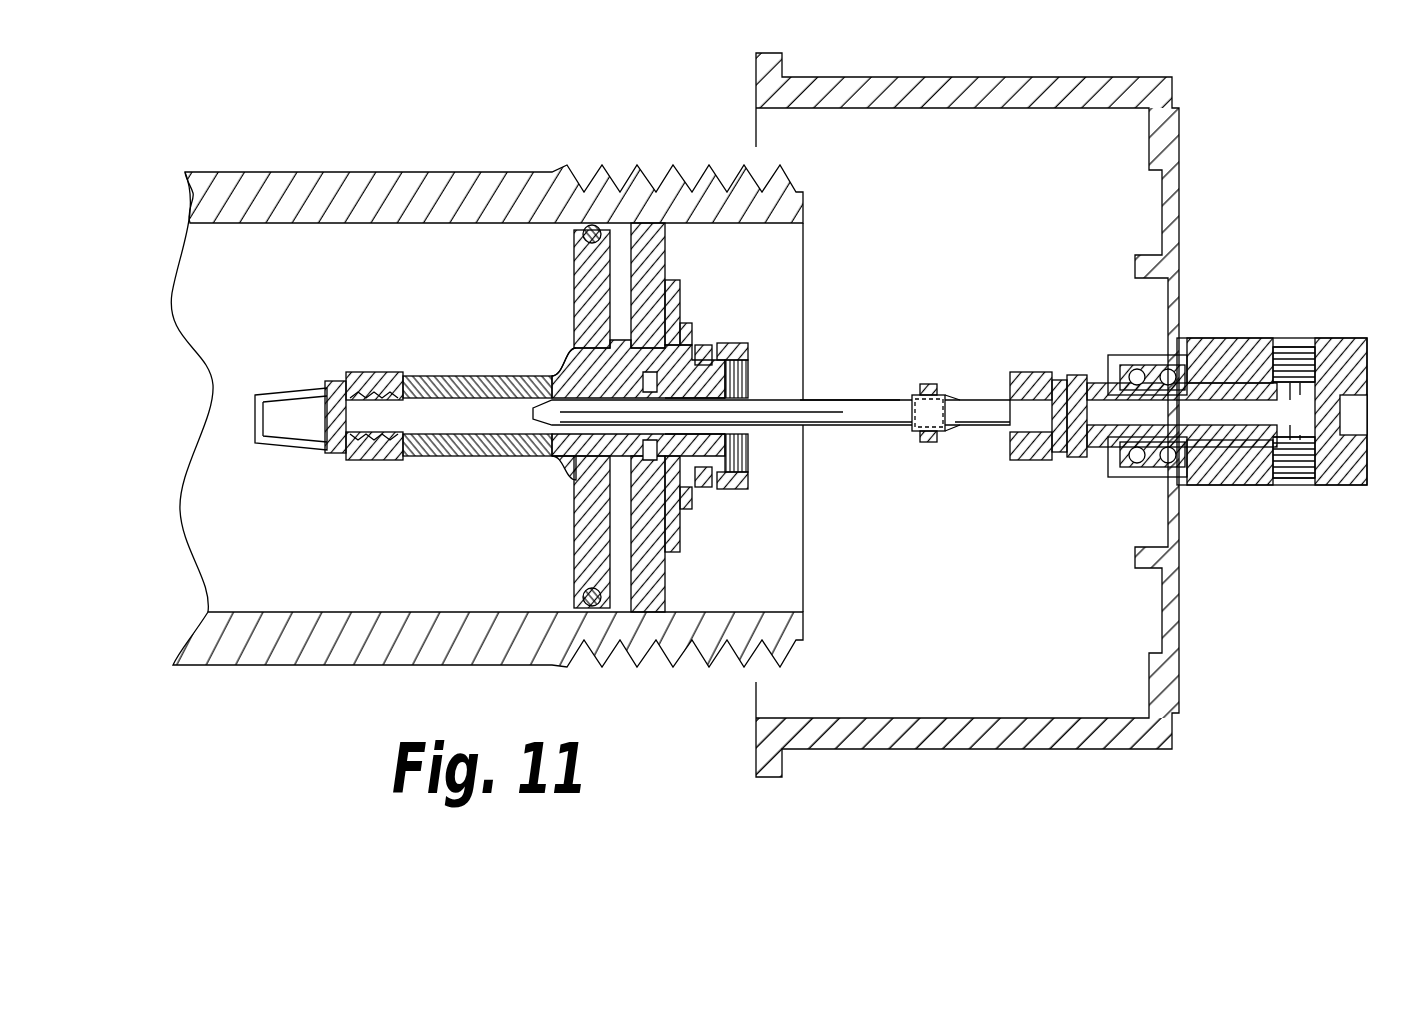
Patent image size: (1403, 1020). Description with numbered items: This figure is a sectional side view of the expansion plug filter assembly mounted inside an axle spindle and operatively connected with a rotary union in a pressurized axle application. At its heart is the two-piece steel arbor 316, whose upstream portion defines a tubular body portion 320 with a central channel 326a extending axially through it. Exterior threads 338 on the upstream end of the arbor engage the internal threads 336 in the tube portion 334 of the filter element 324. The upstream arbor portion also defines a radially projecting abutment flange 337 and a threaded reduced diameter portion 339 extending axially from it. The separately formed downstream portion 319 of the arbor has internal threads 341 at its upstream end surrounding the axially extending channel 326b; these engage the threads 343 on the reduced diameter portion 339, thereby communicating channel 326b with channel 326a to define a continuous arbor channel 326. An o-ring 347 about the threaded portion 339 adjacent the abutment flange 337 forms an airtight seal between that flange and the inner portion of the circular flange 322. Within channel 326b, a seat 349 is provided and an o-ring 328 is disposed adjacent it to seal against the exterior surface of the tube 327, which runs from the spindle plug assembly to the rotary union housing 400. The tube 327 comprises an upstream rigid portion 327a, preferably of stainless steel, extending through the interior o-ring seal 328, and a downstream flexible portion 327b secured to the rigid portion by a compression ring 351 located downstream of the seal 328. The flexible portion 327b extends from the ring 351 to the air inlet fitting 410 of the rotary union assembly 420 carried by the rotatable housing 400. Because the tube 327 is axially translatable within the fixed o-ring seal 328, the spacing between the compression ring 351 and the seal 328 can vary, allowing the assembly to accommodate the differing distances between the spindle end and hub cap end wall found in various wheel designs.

The arbor 316 is at (450, 297).
The downstream portion 319 is at (590, 594).
The tubular body portion 320 is at (492, 382).
The circular flange 322 is at (575, 547).
The filter element 324 is at (300, 392).
The arbor channel 326 is at (484, 420).
The central channel 326a is at (458, 392).
The axially extending channel 326b is at (710, 373).
The tube 327 is at (817, 400).
The upstream rigid portion 327a is at (862, 427).
The downstream flexible portion 327b is at (955, 395).
The o-ring 328 is at (668, 360).
The tube portion 334 is at (362, 466).
The internal threads 336 is at (402, 440).
The abutment flange 337 is at (572, 375).
The exterior threads 338 is at (385, 372).
The threaded reduced diameter portion 339 is at (577, 509).
The internal threads 341 is at (657, 472).
The threads 343 is at (613, 343).
The o-ring 347 is at (583, 372).
The seat 349 is at (738, 486).
The compression ring 351 is at (937, 440).
The rotary union housing 400 is at (1100, 447).
The air inlet fitting 410 is at (1030, 372).
The rotary union assembly 420 is at (1073, 336).